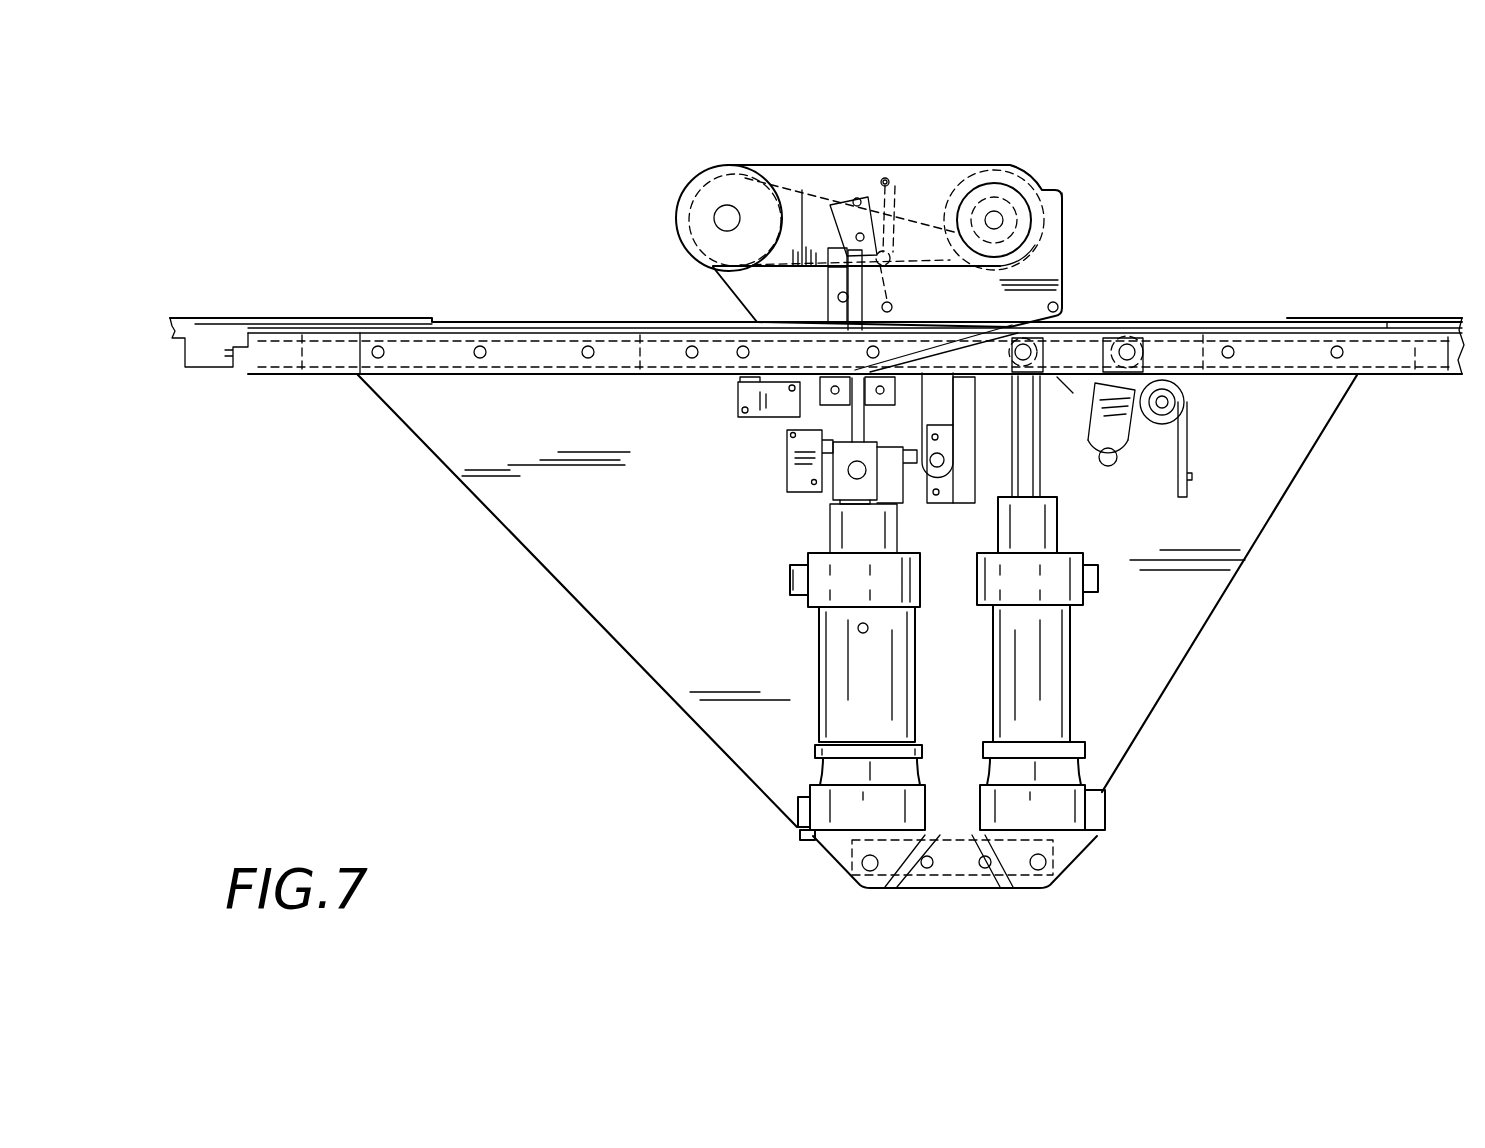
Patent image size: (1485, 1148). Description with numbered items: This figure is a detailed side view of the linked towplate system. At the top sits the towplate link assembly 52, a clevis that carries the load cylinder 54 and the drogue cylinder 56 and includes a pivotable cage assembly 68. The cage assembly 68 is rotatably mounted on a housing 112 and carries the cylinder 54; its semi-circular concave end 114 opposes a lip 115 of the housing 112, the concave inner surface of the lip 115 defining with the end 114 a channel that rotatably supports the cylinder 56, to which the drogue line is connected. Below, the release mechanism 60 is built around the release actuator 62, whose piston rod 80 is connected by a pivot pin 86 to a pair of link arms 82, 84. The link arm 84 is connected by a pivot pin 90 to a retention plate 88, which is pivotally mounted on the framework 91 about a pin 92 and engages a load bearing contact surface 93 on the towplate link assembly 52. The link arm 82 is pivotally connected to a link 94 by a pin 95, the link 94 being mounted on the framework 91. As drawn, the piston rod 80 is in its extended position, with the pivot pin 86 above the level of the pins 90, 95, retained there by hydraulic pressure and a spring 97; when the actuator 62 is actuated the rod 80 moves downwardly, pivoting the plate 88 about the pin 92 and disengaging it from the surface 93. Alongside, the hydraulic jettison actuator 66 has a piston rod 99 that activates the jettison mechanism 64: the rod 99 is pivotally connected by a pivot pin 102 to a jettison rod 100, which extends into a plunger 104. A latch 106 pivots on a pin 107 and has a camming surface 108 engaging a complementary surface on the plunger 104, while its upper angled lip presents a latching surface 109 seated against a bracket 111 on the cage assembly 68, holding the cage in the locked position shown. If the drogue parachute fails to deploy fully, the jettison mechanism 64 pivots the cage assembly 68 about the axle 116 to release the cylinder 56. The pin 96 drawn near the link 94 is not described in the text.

The towplate link assembly 52 is at (1064, 230).
The load cylinder 54 is at (693, 176).
The drogue cylinder 56 is at (1033, 178).
The release mechanism 60 is at (930, 508).
The release actuator 62 is at (1082, 725).
The jettison mechanism 64 is at (884, 168).
The hydraulic jettison actuator 66 is at (818, 728).
The pivotable cage assembly 68 is at (960, 165).
The piston rod 80 is at (1045, 478).
The link arm 82 is at (1090, 326).
The link arm 84 is at (967, 348).
The pivot pin 86 is at (1067, 386).
The retention plate 88 is at (980, 383).
The pivot pin 90 is at (915, 385).
The framework 91 is at (1202, 634).
The pin 92 is at (932, 505).
The contact surface 93 is at (900, 348).
The link 94 is at (1140, 432).
The pin 95 is at (1135, 345).
The pivot 96 is at (1118, 458).
The spring 97 is at (1188, 416).
The piston rod 99 is at (845, 498).
The jettison rod 100 is at (852, 417).
The pivot pin 102 is at (780, 477).
The plunger 104 is at (845, 286).
The latch 106 is at (853, 195).
The pin 107 is at (890, 296).
The camming surface 108 is at (838, 297).
The latching surface 109 is at (880, 180).
The bracket 111 is at (838, 203).
The housing 112 is at (757, 318).
The semi-circular concave end 114 is at (1007, 180).
The lip 115 is at (1066, 186).
The axle 116 is at (722, 216).